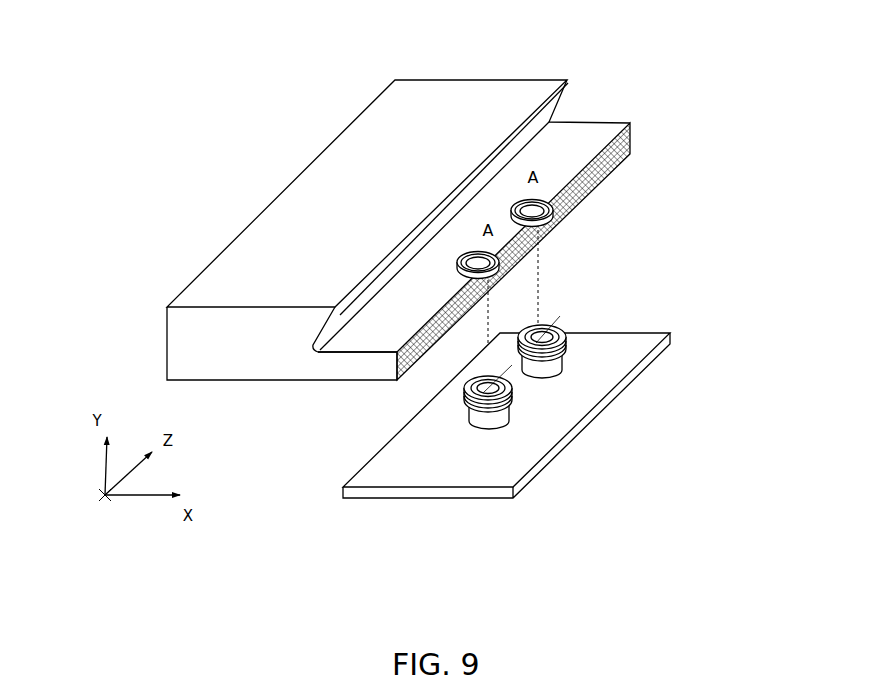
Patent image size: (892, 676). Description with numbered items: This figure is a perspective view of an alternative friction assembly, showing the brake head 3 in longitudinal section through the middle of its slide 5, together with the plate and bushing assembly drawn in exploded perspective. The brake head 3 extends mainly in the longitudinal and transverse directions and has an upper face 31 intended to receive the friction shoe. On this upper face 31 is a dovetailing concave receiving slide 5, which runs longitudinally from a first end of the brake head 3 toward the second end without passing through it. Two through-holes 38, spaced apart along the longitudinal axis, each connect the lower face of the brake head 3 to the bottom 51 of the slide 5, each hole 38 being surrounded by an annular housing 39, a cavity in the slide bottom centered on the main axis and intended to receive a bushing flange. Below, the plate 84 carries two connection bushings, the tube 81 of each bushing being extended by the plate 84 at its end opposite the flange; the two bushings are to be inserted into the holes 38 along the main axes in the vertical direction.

The brake head 3 is at (398, 231).
The upper face 31 is at (438, 100).
The bottom of the slide 51 is at (557, 138).
The receiving slide 5 is at (350, 327).
The annular housing 39 is at (550, 197).
The through-hole 38 is at (549, 252).
The plate 84 is at (622, 343).
The tube 81 is at (565, 362).